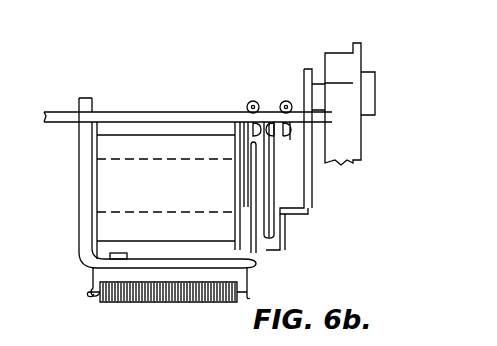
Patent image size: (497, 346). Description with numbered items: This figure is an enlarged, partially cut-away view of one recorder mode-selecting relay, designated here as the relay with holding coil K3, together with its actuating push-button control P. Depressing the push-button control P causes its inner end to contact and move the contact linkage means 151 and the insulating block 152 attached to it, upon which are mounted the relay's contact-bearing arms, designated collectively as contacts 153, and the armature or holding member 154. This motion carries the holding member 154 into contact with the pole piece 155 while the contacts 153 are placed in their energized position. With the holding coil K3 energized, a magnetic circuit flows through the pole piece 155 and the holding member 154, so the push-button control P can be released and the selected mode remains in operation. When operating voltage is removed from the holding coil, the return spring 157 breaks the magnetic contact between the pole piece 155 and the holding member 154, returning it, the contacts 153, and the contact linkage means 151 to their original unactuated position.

The relay holding coil K3 is at (118, 147).
The pole piece 155 is at (243, 150).
The armature or holding member 154 is at (250, 198).
The contact-bearing arms 153 is at (262, 168).
The contact linkage means 151 is at (302, 200).
The insulating block 152 is at (283, 252).
The return spring 157 is at (133, 302).
The push-button control P is at (365, 90).